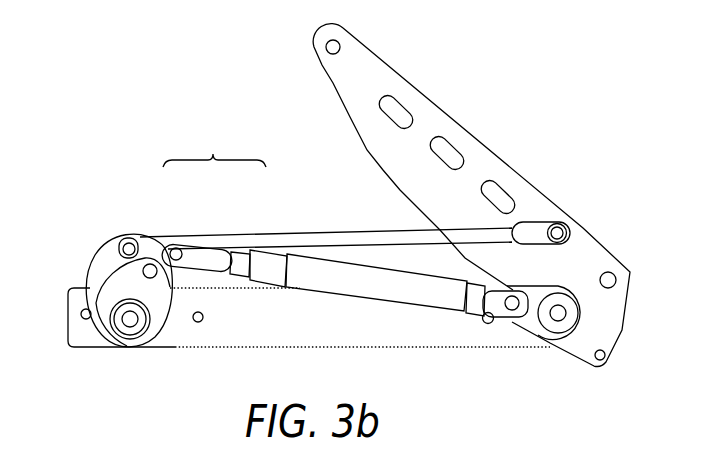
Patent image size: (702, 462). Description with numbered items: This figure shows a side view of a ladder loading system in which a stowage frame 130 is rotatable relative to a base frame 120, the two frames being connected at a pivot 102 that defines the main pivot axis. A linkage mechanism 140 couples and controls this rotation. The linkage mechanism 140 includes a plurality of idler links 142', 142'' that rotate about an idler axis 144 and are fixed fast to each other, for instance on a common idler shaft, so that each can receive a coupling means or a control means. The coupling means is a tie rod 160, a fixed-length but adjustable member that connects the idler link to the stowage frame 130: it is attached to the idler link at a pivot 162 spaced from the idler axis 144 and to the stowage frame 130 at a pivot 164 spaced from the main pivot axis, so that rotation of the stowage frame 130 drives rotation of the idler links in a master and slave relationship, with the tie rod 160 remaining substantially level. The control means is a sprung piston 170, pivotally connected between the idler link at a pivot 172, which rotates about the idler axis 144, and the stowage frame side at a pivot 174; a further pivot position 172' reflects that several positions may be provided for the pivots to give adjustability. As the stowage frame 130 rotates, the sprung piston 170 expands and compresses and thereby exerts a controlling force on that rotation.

The pivot 102 is at (557, 320).
The base frame 120 is at (258, 338).
The stowage frame 130 is at (485, 157).
The linkage mechanism 140 is at (214, 148).
The idler link 142' is at (104, 287).
The idler link 142'' is at (98, 300).
The idler axis 144 is at (132, 326).
The tie rod 160 is at (320, 234).
The pivot 162 is at (133, 238).
The pivot 164 is at (560, 214).
The sprung piston 170 is at (383, 292).
The pivot 172 is at (224, 243).
The link pin 172' is at (184, 289).
The pivot 174 is at (510, 313).